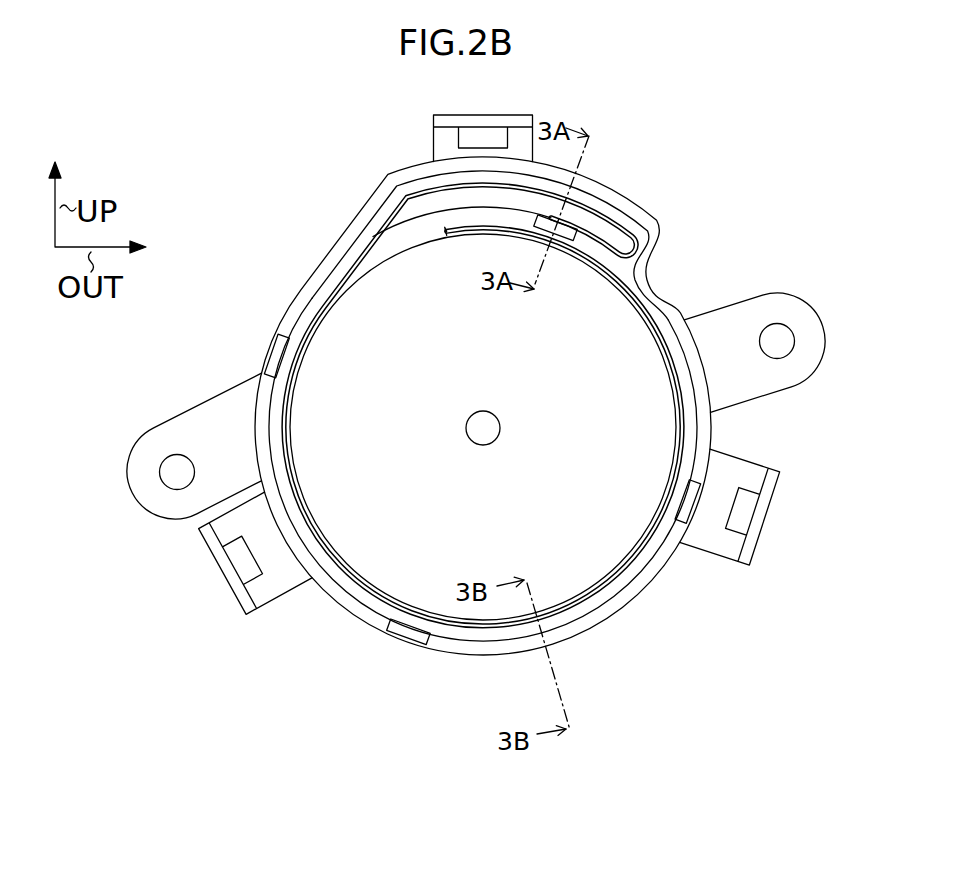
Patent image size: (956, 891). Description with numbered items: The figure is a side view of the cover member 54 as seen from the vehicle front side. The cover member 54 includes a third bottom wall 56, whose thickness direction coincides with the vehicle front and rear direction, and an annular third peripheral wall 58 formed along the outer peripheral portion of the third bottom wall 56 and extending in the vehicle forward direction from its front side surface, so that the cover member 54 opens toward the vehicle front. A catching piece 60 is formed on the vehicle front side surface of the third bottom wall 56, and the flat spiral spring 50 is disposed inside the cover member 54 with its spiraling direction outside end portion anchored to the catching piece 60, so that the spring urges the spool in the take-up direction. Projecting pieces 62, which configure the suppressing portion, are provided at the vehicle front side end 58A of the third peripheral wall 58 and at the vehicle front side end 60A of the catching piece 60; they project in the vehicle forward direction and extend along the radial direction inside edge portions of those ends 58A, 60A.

The flat spiral spring 50 is at (494, 447).
The cover member 54 is at (698, 262).
The third bottom wall 56 is at (575, 553).
The third peripheral wall 58 is at (483, 406).
The vehicle front side end of the third peripheral wall 58A is at (346, 243).
The catching piece 60 is at (483, 405).
The vehicle front side end of the catching piece 60A is at (433, 206).
The projecting pieces 62 is at (573, 222).